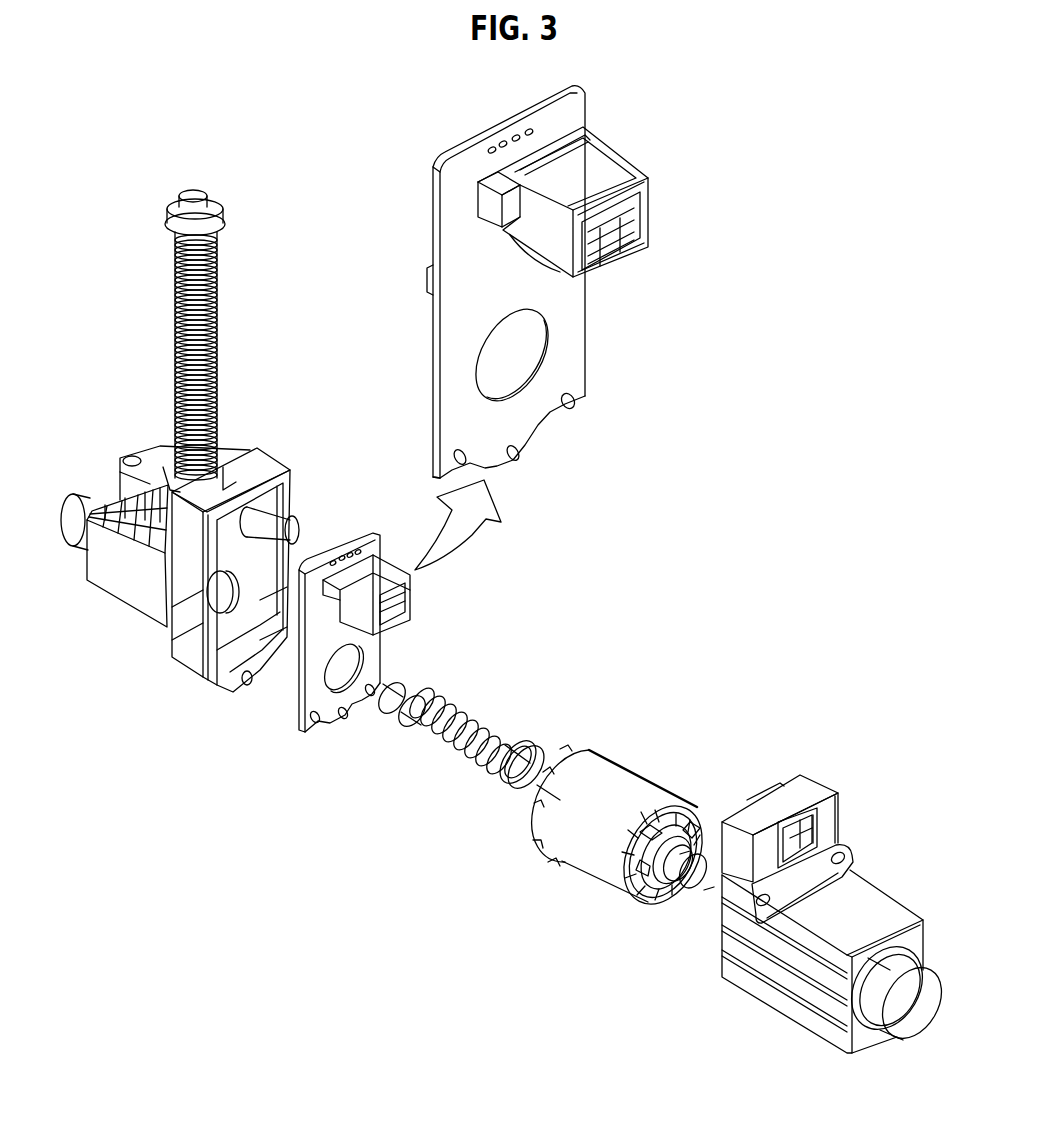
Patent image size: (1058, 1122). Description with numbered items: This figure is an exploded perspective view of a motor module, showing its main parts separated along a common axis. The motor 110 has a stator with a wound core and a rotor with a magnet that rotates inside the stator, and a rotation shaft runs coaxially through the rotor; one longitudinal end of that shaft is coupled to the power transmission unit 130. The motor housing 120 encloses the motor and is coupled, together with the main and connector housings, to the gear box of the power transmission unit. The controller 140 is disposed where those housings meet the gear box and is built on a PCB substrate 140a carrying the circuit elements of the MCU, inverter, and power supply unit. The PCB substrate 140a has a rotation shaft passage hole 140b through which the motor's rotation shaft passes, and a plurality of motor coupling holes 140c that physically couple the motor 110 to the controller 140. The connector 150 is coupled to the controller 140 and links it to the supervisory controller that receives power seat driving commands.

The motor 110 is at (585, 852).
The motor housing 120 is at (757, 983).
The power transmission unit 130 is at (190, 652).
The controller 140 is at (458, 427).
The PCB substrate 140a is at (568, 302).
The rotation shaft passage hole 140b is at (515, 357).
The motor coupling holes 140c is at (574, 402).
The connector 150 is at (648, 140).